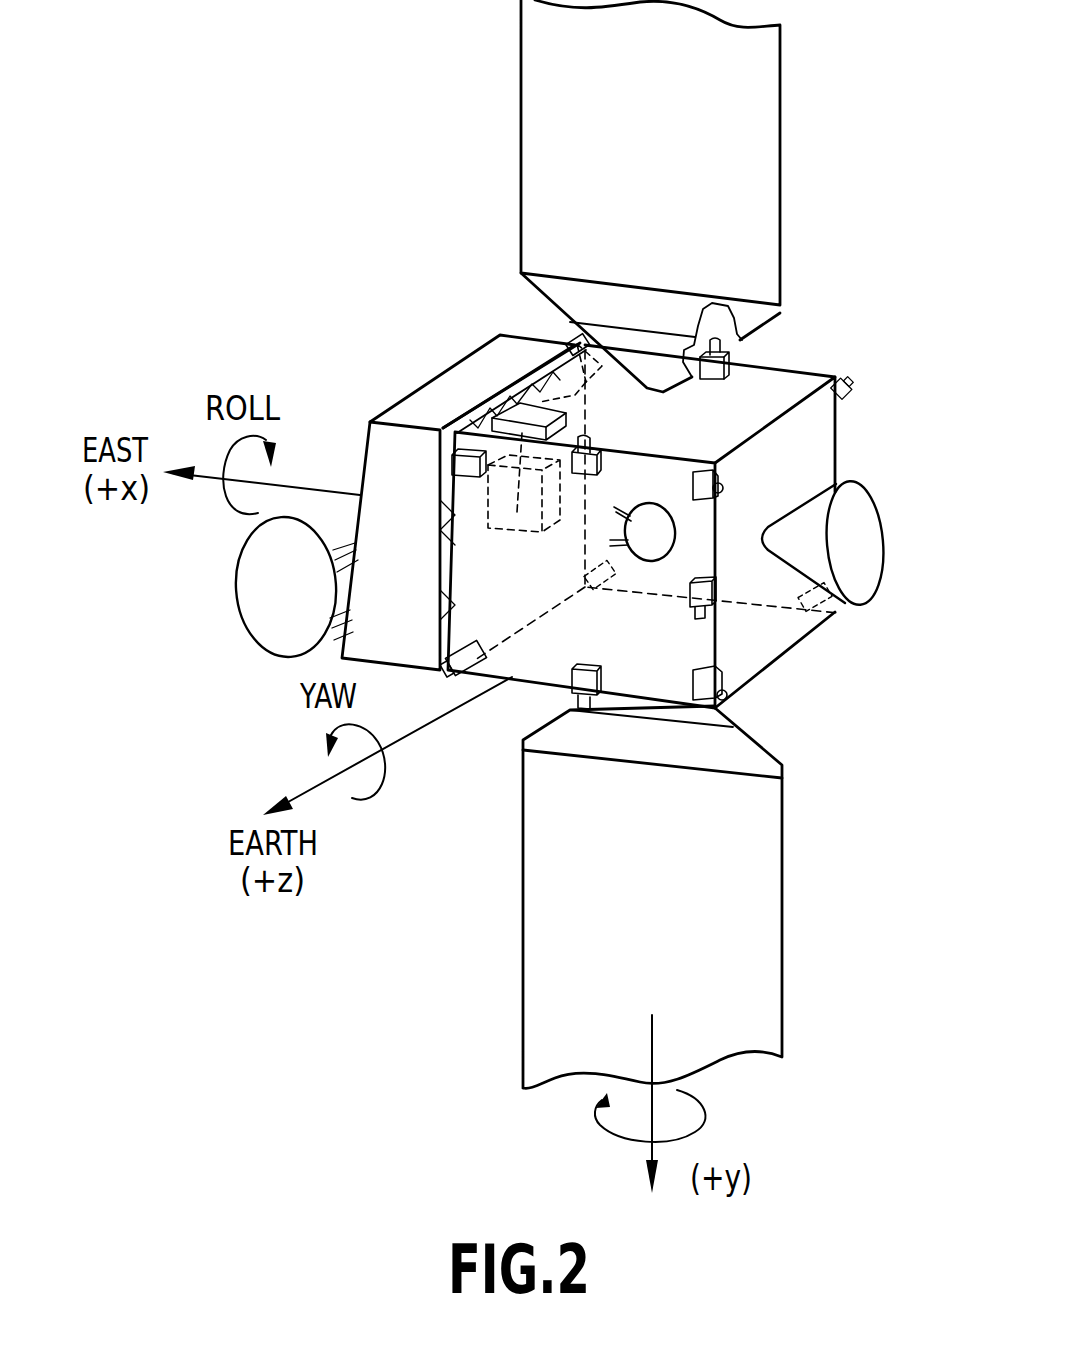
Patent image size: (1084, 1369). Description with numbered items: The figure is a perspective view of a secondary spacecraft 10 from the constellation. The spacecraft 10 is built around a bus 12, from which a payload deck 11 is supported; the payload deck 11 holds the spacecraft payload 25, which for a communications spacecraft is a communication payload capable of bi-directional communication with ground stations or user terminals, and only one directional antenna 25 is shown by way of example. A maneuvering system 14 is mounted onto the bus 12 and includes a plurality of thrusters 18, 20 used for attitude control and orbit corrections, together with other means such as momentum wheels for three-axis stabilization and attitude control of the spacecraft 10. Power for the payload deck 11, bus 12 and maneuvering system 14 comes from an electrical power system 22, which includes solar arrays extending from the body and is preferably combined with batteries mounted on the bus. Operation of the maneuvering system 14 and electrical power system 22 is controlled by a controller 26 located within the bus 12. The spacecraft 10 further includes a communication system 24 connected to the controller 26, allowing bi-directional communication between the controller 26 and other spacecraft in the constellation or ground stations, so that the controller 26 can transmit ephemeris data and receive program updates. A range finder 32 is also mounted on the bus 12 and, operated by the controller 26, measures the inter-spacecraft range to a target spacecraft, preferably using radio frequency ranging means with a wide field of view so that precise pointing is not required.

The secondary spacecraft 10 is at (842, 297).
The payload deck 11 is at (428, 405).
The bus 12 is at (650, 655).
The maneuvering system 14 is at (806, 516).
The thruster 18 is at (862, 557).
The thruster 20 is at (720, 674).
The electrical power system 22 is at (758, 88).
The communication system 24 is at (668, 553).
The directional antenna 25 is at (641, 509).
The controller 26 is at (505, 512).
The range finder 32 is at (562, 396).